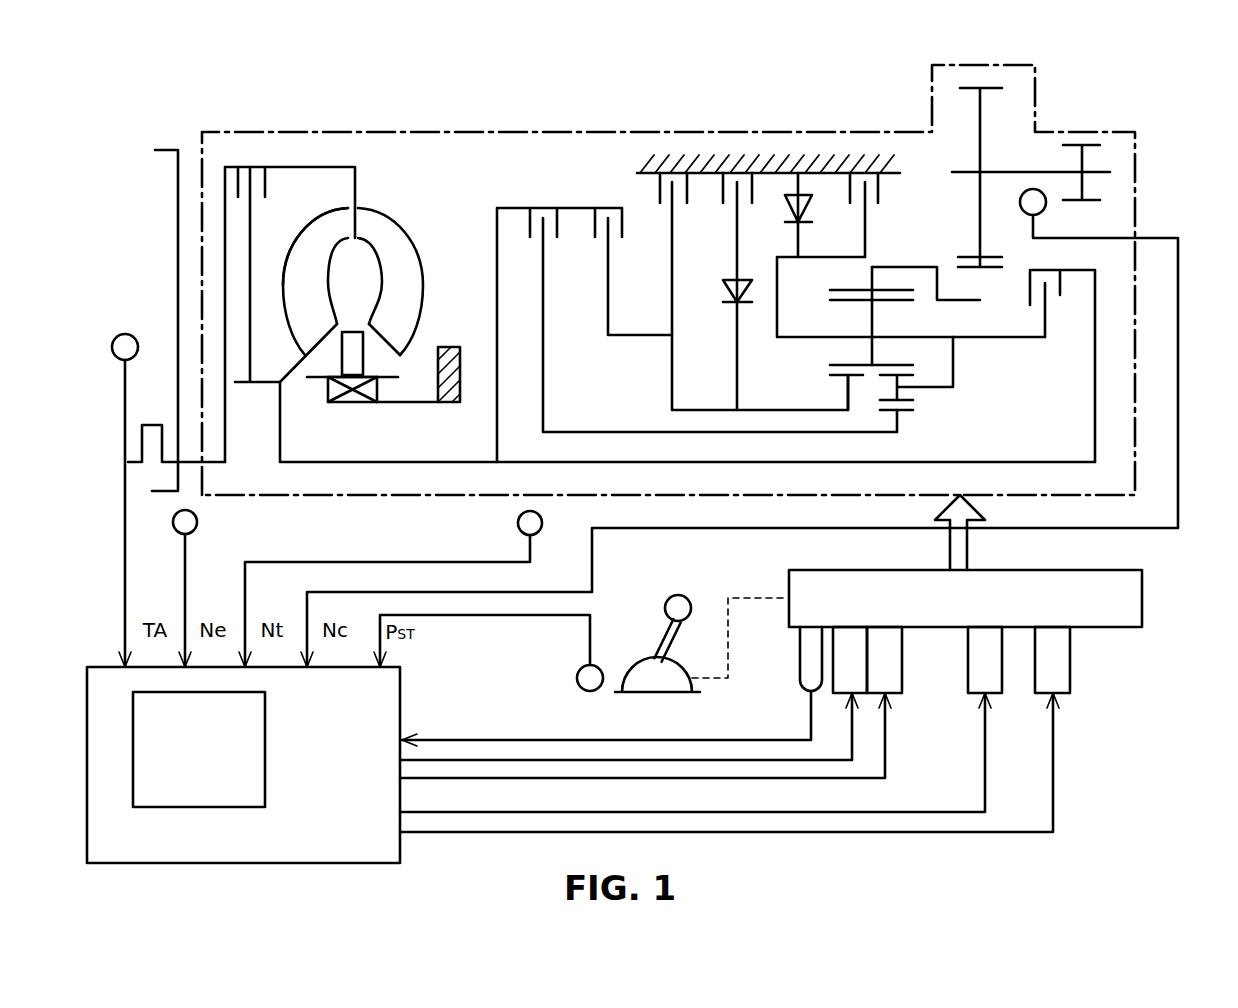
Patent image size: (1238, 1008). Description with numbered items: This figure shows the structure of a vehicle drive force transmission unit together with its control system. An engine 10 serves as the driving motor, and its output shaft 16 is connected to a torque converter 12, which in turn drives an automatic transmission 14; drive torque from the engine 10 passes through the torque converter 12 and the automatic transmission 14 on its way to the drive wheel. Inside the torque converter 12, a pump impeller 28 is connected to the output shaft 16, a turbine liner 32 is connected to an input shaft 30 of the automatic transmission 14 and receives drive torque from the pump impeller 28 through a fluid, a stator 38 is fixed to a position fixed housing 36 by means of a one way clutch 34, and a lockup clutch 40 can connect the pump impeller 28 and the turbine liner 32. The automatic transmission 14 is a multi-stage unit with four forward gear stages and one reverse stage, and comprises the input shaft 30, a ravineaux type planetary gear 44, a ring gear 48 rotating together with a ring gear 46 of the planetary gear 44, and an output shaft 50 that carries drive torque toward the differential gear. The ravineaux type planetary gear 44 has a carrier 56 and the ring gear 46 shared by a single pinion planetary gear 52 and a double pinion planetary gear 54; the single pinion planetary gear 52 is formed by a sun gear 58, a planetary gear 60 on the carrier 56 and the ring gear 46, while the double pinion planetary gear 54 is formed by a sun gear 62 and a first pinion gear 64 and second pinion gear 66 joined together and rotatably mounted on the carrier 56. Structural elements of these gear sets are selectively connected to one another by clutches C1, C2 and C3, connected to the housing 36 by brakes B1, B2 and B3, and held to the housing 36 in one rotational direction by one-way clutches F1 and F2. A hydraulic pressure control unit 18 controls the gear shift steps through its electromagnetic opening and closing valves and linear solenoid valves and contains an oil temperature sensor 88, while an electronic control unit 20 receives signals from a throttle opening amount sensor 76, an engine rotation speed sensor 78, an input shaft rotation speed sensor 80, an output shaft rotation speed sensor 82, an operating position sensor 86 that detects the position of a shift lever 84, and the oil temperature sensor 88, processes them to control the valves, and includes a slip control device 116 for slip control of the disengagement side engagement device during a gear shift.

The engine 10 is at (168, 162).
The torque converter 12 is at (388, 127).
The automatic transmission 14 is at (755, 127).
The output shaft 16 is at (168, 458).
The hydraulic pressure control unit 18 is at (1112, 625).
The electronic control unit 20 is at (410, 712).
The pump impeller 28 is at (392, 243).
The input shaft 30 is at (365, 465).
The turbine liner 32 is at (313, 237).
The one way clutch 34 is at (348, 403).
The housing 36 is at (447, 392).
The stator 38 is at (347, 355).
The lockup clutch 40 is at (238, 180).
The ravineaux type planetary gear 44 is at (897, 260).
The ring gear 46 is at (850, 290).
The ring gear 48 is at (960, 268).
The output shaft 50 is at (1110, 165).
The single pinion planetary gear 52 is at (835, 383).
The double pinion planetary gear 54 is at (900, 428).
The carrier 56 is at (875, 318).
The sun gear 58 is at (830, 372).
The planetary gear 60 is at (850, 300).
The sun gear 62 is at (910, 412).
The first pinion gear 64 is at (913, 400).
The second pinion gear 66 is at (897, 370).
The throttle opening amount sensor 76 is at (125, 334).
The engine rotation speed sensor 78 is at (178, 533).
The input shaft rotation speed sensor 80 is at (538, 532).
The output shaft rotation speed sensor 82 is at (1022, 210).
The shift lever 84 is at (666, 606).
The operating position sensor 86 is at (578, 676).
The oil temperature sensor 88 is at (802, 656).
The slip control device 116 is at (267, 776).
The clutch C1 is at (530, 240).
The clutch C2 is at (1060, 295).
The clutch C3 is at (595, 238).
The brake B1 is at (660, 195).
The brake B2 is at (723, 195).
The brake B3 is at (850, 195).
The one-way clutch F1 is at (730, 302).
The one-way clutch F2 is at (788, 205).